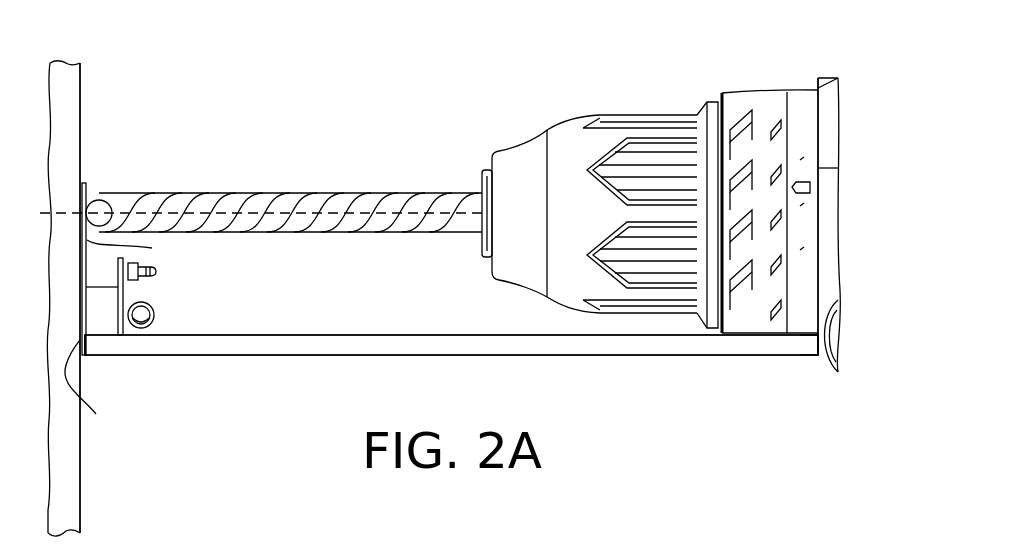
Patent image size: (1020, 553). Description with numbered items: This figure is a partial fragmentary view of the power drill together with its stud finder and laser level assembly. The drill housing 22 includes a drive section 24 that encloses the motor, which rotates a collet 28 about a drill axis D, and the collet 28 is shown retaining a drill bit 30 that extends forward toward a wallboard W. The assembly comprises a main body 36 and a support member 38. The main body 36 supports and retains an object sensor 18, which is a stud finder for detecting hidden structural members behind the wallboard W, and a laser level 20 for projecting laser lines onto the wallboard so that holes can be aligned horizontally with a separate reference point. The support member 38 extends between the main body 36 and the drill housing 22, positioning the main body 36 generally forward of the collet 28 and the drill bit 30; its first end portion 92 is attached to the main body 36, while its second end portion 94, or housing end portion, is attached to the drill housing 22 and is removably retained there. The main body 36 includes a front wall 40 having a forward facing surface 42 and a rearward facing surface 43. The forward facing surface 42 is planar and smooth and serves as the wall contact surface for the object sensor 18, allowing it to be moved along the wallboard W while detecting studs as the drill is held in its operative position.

The wallboard W is at (63, 92).
The rearward facing surface 43 is at (87, 193).
The laser level 20 is at (284, 182).
The drill bit 30 is at (284, 182).
The drill axis D is at (322, 210).
The front wall 40 is at (137, 248).
The object sensor 18 is at (165, 284).
The main body 36 is at (180, 307).
The support member 38 is at (299, 345).
The first end portion 92 is at (98, 357).
The forward facing surface 42 is at (88, 392).
The collet 28 is at (578, 130).
The drive section 24 is at (801, 194).
The drill housing 22 is at (820, 80).
The second end portion 94 is at (807, 347).